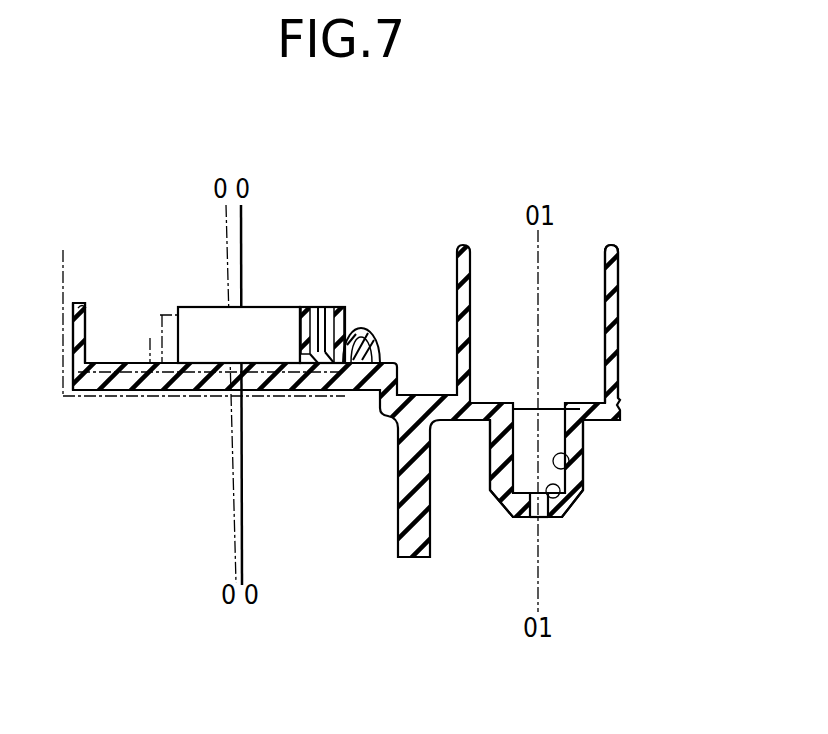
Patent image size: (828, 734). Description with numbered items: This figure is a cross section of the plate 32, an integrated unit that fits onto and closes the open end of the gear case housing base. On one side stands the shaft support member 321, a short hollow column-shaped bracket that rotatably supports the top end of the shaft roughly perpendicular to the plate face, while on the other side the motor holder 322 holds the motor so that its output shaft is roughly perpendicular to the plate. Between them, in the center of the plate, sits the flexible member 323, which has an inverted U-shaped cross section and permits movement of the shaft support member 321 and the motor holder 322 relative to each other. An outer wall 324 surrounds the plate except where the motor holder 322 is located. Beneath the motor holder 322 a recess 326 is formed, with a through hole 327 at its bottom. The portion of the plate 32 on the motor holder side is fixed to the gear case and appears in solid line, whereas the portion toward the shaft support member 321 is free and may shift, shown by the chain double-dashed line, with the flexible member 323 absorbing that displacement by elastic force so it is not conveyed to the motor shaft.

The plate 32 is at (634, 418).
The shaft support member 321 is at (271, 308).
The motor holder 322 is at (620, 308).
The flexible member 323 is at (373, 330).
The outer wall 324 is at (76, 302).
The recess 326 is at (569, 456).
The through hole 327 is at (560, 494).